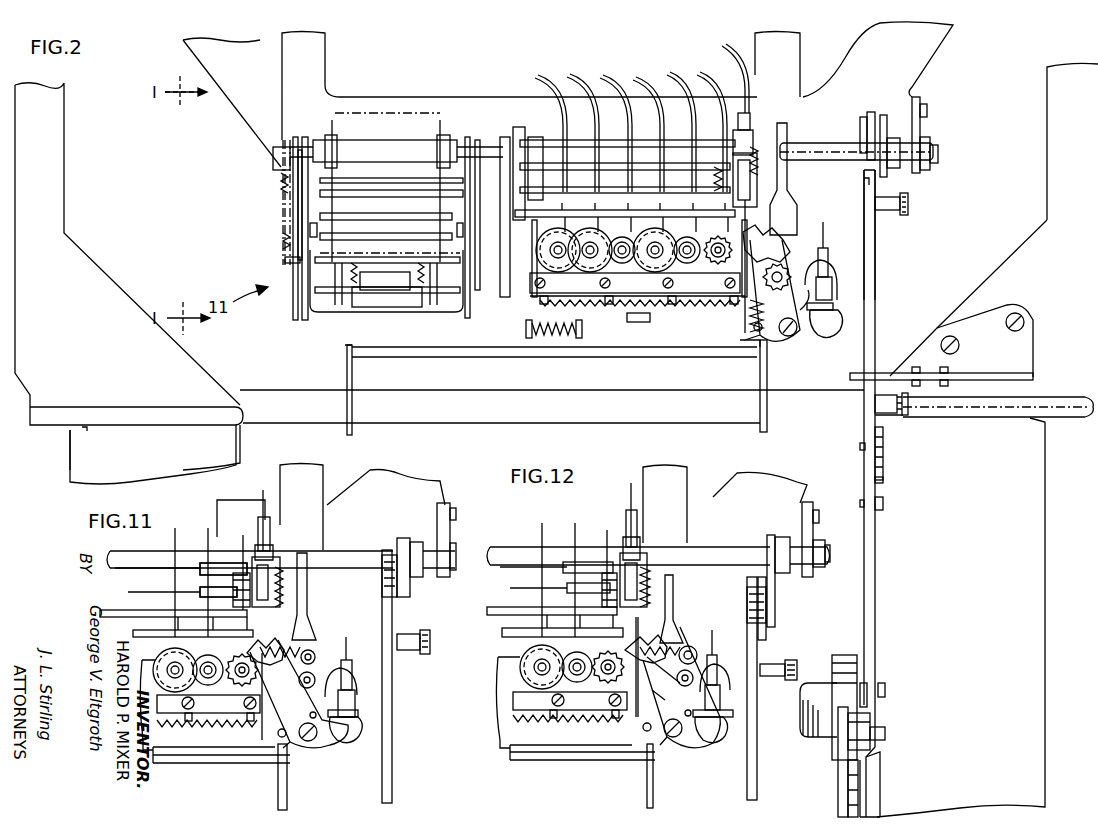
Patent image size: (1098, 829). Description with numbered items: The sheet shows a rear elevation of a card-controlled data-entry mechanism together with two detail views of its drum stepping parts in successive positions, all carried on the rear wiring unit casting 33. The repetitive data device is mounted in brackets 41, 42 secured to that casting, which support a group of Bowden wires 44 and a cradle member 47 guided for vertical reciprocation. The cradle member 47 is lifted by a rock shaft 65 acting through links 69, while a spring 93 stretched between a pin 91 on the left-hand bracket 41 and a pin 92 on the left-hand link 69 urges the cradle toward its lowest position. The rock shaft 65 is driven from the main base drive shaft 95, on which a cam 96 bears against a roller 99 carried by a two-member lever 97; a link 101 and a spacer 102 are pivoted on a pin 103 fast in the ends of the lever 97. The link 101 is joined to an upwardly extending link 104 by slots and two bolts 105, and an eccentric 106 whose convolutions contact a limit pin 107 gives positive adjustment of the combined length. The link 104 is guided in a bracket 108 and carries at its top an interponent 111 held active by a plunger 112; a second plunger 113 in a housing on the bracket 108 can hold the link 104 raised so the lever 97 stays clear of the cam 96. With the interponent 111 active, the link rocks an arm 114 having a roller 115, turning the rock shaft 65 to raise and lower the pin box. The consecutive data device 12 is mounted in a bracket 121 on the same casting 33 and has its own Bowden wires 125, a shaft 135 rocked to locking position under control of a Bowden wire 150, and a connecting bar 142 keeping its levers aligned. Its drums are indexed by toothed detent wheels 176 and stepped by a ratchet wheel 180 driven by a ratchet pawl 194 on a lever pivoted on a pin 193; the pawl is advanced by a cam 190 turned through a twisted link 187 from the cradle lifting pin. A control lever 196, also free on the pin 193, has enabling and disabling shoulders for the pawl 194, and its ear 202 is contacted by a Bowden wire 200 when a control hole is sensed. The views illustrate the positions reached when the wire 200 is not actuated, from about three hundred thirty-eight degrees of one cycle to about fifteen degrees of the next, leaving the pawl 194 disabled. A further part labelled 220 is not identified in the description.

In FIG. 2, the consecutive data device 12 is at (656, 322).
In FIG. 2, the rear wiring unit casting 33 is at (862, 55).
In FIG. 2, the bracket 41 is at (304, 315).
In FIG. 2, the bracket 42 is at (467, 310).
In FIG. 2, the Bowden wires 44 is at (427, 125).
In FIG. 2, the cradle member 47 is at (337, 314).
In FIG. 2, the rock shaft 65 is at (550, 150).
In FIG. 12, the rock shaft 65 is at (507, 553).
In FIG. 2, the link 69 is at (474, 138).
In FIG. 2, the pin 91 is at (294, 265).
In FIG. 2, the pin 92 is at (287, 168).
In FIG. 2, the spring 93 is at (283, 193).
In FIG. 2, the main base drive shaft 95 is at (810, 738).
In FIG. 2, the cam 96 is at (853, 657).
In FIG. 2, the lever 97 is at (848, 792).
In FIG. 2, the roller 99 is at (872, 812).
In FIG. 2, the link 101 is at (877, 667).
In FIG. 2, the spacer 102 is at (862, 730).
In FIG. 2, the pin 103 is at (888, 733).
In FIG. 2, the link 104 is at (866, 306).
In FIG. 2, the bolts 105 is at (884, 512).
In FIG. 2, the eccentric 106 is at (884, 465).
In FIG. 2, the limit pin 107 is at (884, 481).
In FIG. 2, the bracket 108 is at (890, 373).
In FIG. 2, the interponent 111 is at (876, 226).
In FIG. 11, the interponent 111 is at (393, 692).
In FIG. 12, the interponent 111 is at (762, 720).
In FIG. 2, the plunger 112 is at (908, 217).
In FIG. 11, the plunger 112 is at (430, 637).
In FIG. 12, the plunger 112 is at (793, 660).
In FIG. 2, the plunger 113 is at (906, 411).
In FIG. 2, the arm 114 is at (886, 130).
In FIG. 11, the arm 114 is at (403, 549).
In FIG. 12, the arm 114 is at (771, 537).
In FIG. 2, the roller 115 is at (863, 130).
In FIG. 11, the roller 115 is at (393, 574).
In FIG. 12, the roller 115 is at (748, 593).
In FIG. 2, the bracket 121 is at (530, 316).
In FIG. 2, the Bowden wires 125 is at (666, 72).
In FIG. 2, the shaft 135 is at (700, 185).
In FIG. 11, the shaft 135 is at (226, 590).
In FIG. 12, the shaft 135 is at (588, 587).
In FIG. 2, the connecting bar 142 is at (671, 163).
In FIG. 11, the connecting bar 142 is at (207, 567).
In FIG. 12, the connecting bar 142 is at (567, 566).
In FIG. 2, the Bowden wire 150 is at (747, 67).
In FIG. 11, the Bowden wire 150 is at (265, 497).
In FIG. 12, the Bowden wire 150 is at (634, 493).
In FIG. 2, the toothed detent wheel 176 is at (716, 306).
In FIG. 11, the toothed detent wheel 176 is at (236, 714).
In FIG. 12, the toothed detent wheel 176 is at (604, 715).
In FIG. 2, the ratchet wheel 180 is at (635, 286).
In FIG. 11, the ratchet wheel 180 is at (208, 704).
In FIG. 12, the ratchet wheel 180 is at (570, 701).
In FIG. 2, the twisted link 187 is at (791, 190).
In FIG. 11, the twisted link 187 is at (309, 585).
In FIG. 12, the twisted link 187 is at (674, 581).
In FIG. 2, the cam 190 is at (807, 268).
In FIG. 11, the cam 190 is at (334, 688).
In FIG. 12, the cam 190 is at (698, 688).
In FIG. 2, the pin 193 is at (780, 336).
In FIG. 2, the ratchet pawl 194 is at (758, 213).
In FIG. 11, the ratchet pawl 194 is at (296, 636).
In FIG. 12, the ratchet pawl 194 is at (645, 640).
In FIG. 2, the control lever 196 is at (814, 340).
In FIG. 11, the control lever 196 is at (328, 750).
In FIG. 12, the control lever 196 is at (702, 745).
In FIG. 2, the Bowden wire 200 is at (826, 234).
In FIG. 11, the Bowden wire 200 is at (343, 645).
In FIG. 12, the Bowden wire 200 is at (707, 645).
In FIG. 2, the ear 202 is at (836, 318).
In FIG. 11, the ear 202 is at (346, 728).
In FIG. 12, the ear 202 is at (727, 735).
In FIG. 2, the housing line 220 is at (488, 100).